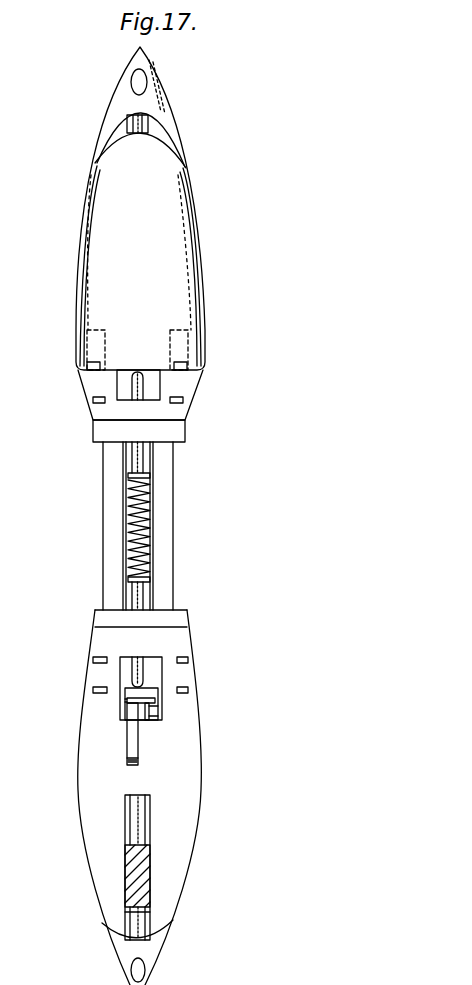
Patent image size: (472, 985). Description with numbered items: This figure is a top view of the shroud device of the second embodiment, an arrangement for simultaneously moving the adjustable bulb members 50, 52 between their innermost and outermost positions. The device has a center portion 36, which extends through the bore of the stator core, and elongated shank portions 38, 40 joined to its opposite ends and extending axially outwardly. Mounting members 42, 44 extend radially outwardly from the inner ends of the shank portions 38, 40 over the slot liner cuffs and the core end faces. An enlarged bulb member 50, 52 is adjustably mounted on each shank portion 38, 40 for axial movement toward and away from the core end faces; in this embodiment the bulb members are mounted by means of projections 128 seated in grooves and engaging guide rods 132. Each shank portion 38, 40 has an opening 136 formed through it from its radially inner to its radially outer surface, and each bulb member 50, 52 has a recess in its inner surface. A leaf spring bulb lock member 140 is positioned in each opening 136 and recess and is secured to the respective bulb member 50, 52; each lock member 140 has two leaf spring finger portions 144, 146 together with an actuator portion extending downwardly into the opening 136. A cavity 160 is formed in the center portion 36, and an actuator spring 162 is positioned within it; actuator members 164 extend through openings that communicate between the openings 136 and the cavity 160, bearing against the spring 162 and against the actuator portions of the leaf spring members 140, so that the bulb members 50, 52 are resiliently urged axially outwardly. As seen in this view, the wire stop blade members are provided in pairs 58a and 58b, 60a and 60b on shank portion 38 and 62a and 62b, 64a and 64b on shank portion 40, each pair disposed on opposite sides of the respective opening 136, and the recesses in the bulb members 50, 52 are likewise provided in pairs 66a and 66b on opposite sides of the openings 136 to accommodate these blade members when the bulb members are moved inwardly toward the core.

The shank portion 38 is at (171, 110).
The bulb member 50 is at (193, 233).
The recess 66a is at (96, 330).
The recess 66b is at (175, 335).
The blade member 58a is at (104, 359).
The blade member 58b is at (185, 361).
The opening 136 is at (152, 383).
The blade member 60a is at (93, 399).
The blade member 60b is at (183, 399).
The mounting member 42 is at (170, 433).
The actuator member 164 is at (144, 465).
The actuator spring 162 is at (130, 507).
The center portion 36 is at (175, 553).
The cavity 160 is at (148, 600).
The mounting member 44 is at (104, 620).
The blade member 62a is at (98, 656).
The blade member 62b is at (180, 655).
The blade member 64a is at (98, 687).
The blade member 64b is at (188, 689).
The leaf spring finger portion 146 is at (152, 710).
The latch bar 144 is at (127, 757).
The leaf spring bulb lock member 140 is at (161, 723).
The bulb member 52 is at (195, 825).
The projection 128 is at (143, 878).
The guide rod 132 is at (138, 923).
The shank portion 40 is at (107, 947).